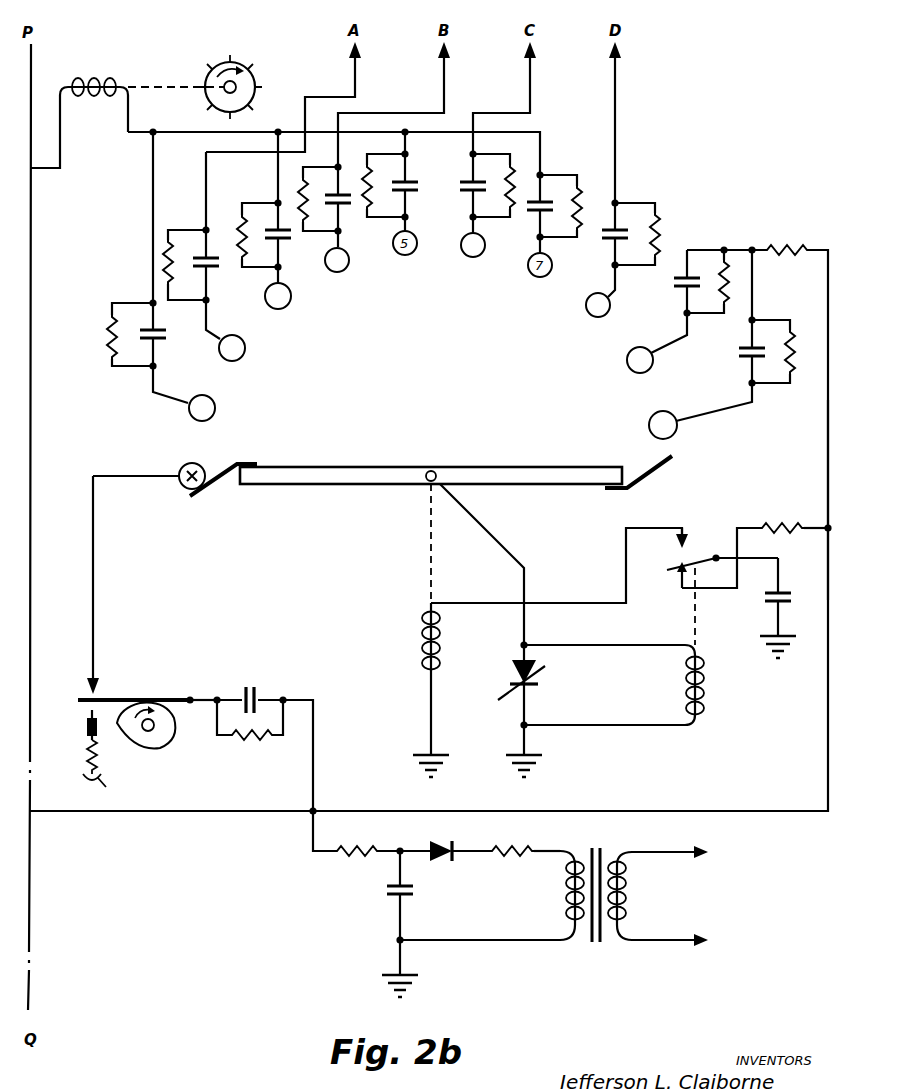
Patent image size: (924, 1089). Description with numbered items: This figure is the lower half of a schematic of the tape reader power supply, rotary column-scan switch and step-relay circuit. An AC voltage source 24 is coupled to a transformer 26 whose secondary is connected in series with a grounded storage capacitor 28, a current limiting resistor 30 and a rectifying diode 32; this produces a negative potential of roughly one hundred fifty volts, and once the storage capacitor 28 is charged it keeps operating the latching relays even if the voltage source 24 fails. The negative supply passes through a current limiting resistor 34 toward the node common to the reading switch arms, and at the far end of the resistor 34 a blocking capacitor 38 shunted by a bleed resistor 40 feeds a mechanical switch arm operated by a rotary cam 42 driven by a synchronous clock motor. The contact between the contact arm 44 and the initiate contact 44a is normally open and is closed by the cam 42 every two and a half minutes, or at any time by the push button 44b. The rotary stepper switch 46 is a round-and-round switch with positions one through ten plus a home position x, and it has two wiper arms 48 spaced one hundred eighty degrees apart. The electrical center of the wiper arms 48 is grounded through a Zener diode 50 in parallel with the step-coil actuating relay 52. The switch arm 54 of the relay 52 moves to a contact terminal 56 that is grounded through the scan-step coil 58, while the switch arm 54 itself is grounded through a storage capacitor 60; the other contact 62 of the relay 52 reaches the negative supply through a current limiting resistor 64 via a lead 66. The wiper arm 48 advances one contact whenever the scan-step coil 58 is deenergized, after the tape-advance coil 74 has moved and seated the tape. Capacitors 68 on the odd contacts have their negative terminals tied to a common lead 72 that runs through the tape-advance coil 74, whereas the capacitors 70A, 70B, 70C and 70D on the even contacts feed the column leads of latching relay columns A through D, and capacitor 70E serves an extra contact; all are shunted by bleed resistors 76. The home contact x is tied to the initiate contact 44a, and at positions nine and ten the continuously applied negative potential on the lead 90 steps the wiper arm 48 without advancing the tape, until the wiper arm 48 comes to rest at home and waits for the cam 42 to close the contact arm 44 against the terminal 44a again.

The AC voltage source 24 is at (690, 918).
The transformer 26 is at (596, 941).
The storage capacitor 28 is at (393, 896).
The current limiting resistor 30 is at (511, 860).
The rectifying diode 32 is at (438, 856).
The current limiting resistor 34 is at (368, 858).
The blocking capacitor 38 is at (257, 696).
The bleed resistor 40 is at (253, 739).
The rotary cam 42 is at (152, 741).
The contact arm 44 is at (121, 700).
The initiate contact 44a is at (86, 688).
The push button 44b is at (96, 782).
The rotary stepper switch 46 is at (278, 309).
The wiper arms 48 is at (353, 466).
The Zener diode 50 is at (540, 687).
The step-coil actuating relay 52 is at (706, 691).
The switch arm 54 is at (677, 563).
The contact terminal 56 is at (686, 534).
The scan-step coil 58 is at (421, 613).
The storage capacitor 60 is at (775, 603).
The other contact 62 is at (678, 577).
The current limiting resistor 64 is at (778, 523).
The lead 66 is at (786, 809).
The capacitors 68 is at (158, 333).
The capacitor 70A is at (200, 236).
The capacitor 70B is at (350, 235).
The capacitor 70C is at (460, 200).
The capacitor 70D is at (609, 244).
The capacitor 70E is at (740, 358).
The common lead 72 is at (282, 132).
The tape-advance coil 74 is at (100, 80).
The resistor 76 is at (789, 247).
The lead 90 is at (828, 468).